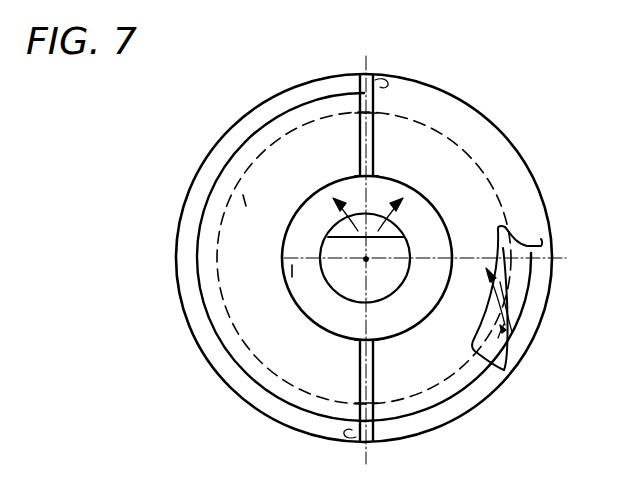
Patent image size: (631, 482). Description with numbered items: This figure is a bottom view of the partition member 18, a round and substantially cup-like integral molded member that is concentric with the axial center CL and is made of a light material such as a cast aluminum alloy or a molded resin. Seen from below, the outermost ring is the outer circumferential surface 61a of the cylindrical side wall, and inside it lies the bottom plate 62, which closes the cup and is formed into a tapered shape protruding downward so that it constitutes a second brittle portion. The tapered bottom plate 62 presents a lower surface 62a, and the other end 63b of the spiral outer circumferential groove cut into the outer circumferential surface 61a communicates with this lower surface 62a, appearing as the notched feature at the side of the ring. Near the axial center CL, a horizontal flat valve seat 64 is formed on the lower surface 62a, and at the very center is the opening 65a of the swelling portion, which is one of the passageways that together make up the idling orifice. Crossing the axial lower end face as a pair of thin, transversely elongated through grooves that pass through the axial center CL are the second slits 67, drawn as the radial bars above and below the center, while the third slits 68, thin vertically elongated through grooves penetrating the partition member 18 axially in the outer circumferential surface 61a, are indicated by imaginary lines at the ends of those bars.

The partition member 18 is at (517, 129).
The outer circumferential surface 61a is at (562, 168).
The bottom plate 62 is at (273, 170).
The lower surface 62a is at (244, 201).
The other end of the outer circumferential groove 63b is at (512, 368).
The valve seat 64 is at (292, 271).
The opening 65a is at (328, 290).
The second pair of slits 67 is at (359, 132).
The third pair of slits 68 is at (380, 82).
The axial center CL is at (366, 261).